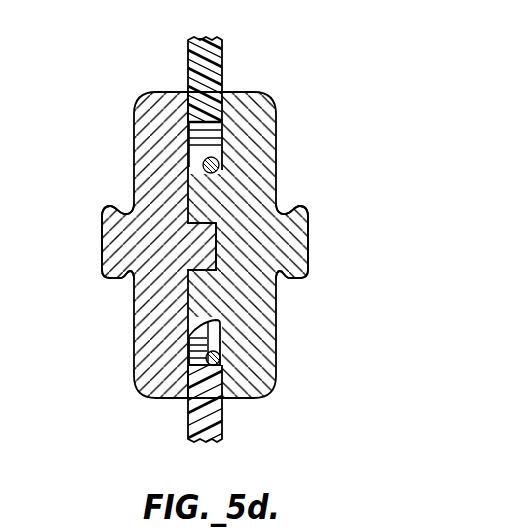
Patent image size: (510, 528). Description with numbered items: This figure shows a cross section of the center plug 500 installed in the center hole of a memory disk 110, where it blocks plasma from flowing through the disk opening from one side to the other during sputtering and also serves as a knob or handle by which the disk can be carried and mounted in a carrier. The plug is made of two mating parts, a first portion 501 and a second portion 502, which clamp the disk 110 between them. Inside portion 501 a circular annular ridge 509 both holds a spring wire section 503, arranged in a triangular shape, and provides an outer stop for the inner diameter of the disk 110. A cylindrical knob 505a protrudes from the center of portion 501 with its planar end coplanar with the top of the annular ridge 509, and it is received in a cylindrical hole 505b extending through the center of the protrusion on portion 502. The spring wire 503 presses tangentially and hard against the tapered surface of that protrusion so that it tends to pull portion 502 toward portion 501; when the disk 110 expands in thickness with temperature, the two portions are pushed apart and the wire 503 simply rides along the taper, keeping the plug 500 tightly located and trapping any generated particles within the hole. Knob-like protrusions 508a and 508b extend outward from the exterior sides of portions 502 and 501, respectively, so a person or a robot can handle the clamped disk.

The center plug 500 is at (151, 69).
The disk 110 is at (223, 52).
The portion of the center plug 501 is at (157, 110).
The portion of the center plug 502 is at (258, 108).
The spring wire section 503 is at (205, 162).
The cylindrical knob 505a is at (214, 246).
The cylindrical hole 505b is at (219, 228).
The knob-like protrusion 508a is at (309, 247).
The knob-like protrusion 508b is at (105, 240).
The annular ridge 509 is at (219, 107).